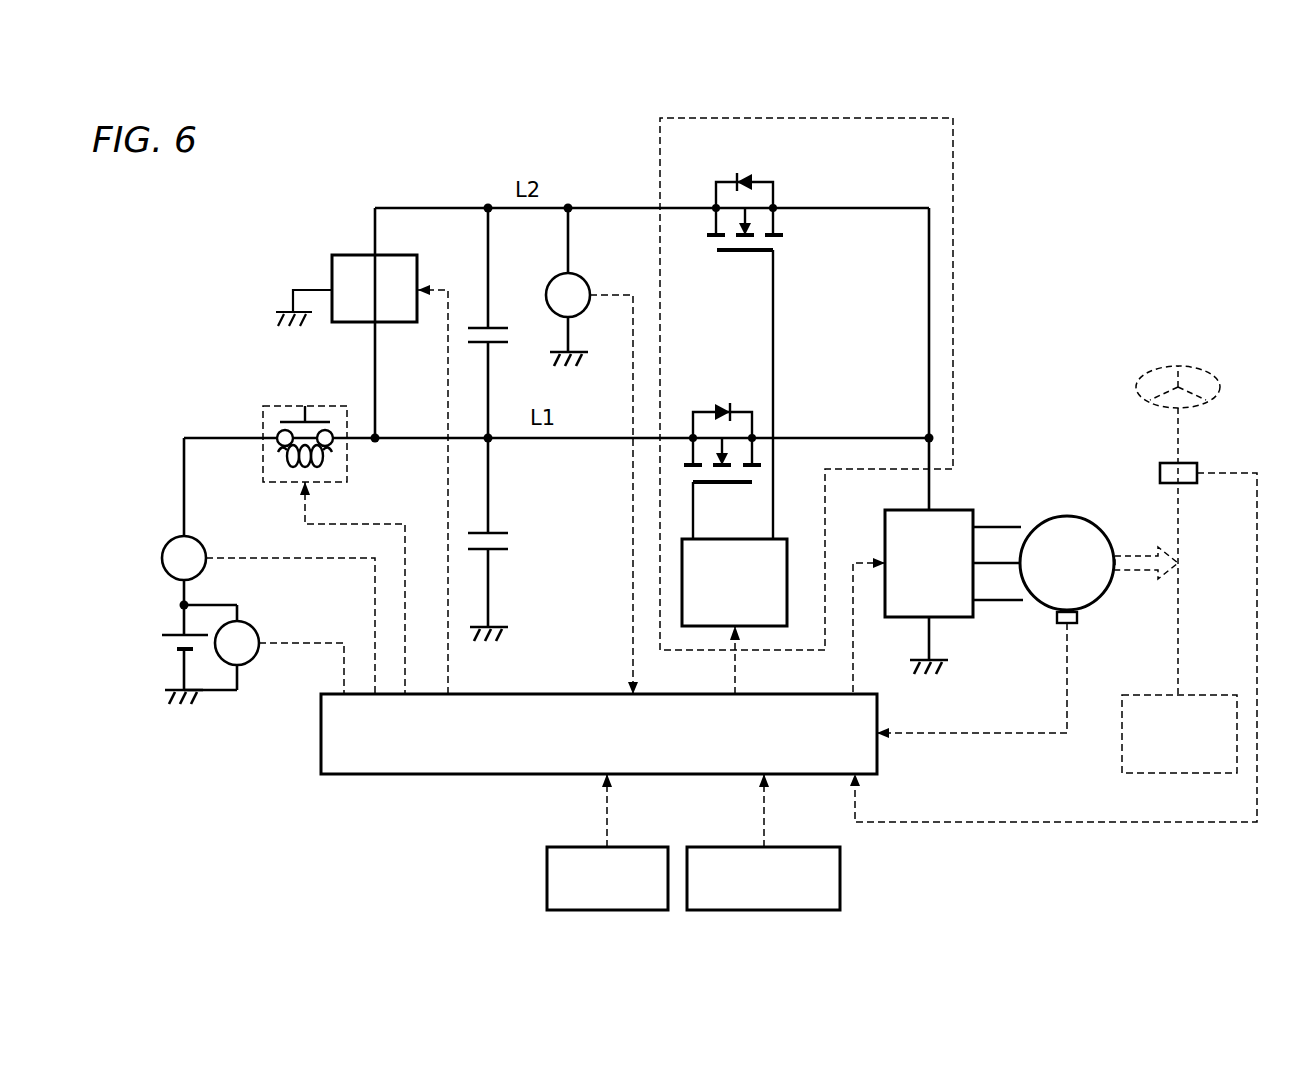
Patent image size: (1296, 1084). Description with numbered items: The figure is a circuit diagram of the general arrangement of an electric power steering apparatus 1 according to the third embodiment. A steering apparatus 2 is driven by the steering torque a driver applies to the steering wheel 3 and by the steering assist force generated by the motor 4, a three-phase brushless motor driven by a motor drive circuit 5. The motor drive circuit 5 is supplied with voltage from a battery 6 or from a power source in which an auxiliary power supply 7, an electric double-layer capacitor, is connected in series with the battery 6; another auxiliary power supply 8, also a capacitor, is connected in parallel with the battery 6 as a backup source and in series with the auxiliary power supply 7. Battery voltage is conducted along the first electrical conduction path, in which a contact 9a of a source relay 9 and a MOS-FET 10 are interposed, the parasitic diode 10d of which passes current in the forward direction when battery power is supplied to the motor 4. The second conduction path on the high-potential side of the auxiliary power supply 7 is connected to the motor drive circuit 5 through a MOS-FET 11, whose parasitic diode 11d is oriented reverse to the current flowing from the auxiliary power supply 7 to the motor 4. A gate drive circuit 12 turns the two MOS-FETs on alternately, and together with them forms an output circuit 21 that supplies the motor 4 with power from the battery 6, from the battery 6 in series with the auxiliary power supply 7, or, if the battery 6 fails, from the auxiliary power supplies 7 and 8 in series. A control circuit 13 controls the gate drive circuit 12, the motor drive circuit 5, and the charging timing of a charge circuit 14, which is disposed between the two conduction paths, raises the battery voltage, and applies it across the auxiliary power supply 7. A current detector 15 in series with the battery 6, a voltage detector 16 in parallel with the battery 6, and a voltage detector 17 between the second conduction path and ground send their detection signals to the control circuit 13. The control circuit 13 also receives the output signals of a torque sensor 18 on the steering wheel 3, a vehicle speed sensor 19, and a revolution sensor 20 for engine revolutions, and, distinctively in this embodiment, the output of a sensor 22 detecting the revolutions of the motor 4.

The electric power steering apparatus 1 is at (1120, 245).
The steering apparatus 2 is at (1205, 695).
The steering wheel 3 is at (1218, 376).
The motor 4 is at (1095, 520).
The motor drive circuit 5 is at (965, 510).
The battery 6 is at (175, 632).
The auxiliary power supply 7 is at (480, 326).
The auxiliary power supply 8 is at (480, 532).
The source relay 9 is at (328, 517).
The contact 9a is at (305, 406).
The MOS-FET 10 is at (717, 449).
The parasitic diode 10d is at (722, 405).
The MOS-FET 11 is at (763, 335).
The parasitic diode 11d is at (748, 170).
The gate drive circuit 12 is at (787, 558).
The control circuit 13 is at (600, 694).
The charge circuit 14 is at (358, 255).
The current detector 15 is at (190, 538).
The voltage detector 16 is at (250, 624).
The voltage detector 17 is at (580, 276).
The torque sensor 18 is at (1188, 463).
The vehicle speed sensor 19 is at (840, 884).
The revolution sensor 20 is at (547, 884).
The output circuit 21 is at (953, 263).
The sensor 22 is at (1080, 618).